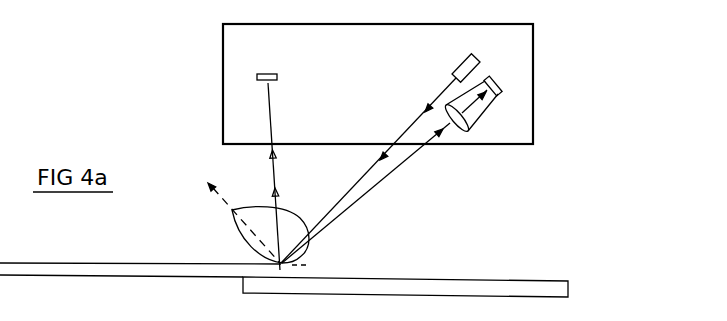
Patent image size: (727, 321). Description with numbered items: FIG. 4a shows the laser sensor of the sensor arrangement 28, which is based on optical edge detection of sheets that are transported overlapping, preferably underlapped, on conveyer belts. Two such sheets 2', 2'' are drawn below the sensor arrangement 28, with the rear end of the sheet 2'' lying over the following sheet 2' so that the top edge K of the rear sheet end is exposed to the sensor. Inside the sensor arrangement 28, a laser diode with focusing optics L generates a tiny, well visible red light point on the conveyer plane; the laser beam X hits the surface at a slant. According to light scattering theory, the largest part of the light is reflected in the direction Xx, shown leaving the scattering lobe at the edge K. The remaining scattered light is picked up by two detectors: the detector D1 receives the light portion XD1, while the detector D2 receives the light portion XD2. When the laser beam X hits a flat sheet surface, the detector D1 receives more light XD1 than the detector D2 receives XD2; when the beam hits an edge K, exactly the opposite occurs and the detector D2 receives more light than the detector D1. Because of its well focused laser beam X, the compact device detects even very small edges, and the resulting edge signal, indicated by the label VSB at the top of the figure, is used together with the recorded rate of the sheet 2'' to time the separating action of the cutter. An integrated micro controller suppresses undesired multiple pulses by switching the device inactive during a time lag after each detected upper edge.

The sensor arrangement 28 is at (348, 25).
The detector D1 is at (280, 82).
The detector D2 is at (484, 105).
The laser diode with focusing optics L is at (470, 62).
The edge K is at (305, 257).
The laser beam X is at (395, 147).
The light received by detector D1 XD1 is at (275, 122).
The light received by detector D2 XD2 is at (384, 176).
The reflection direction Xx is at (238, 211).
The sheet 2' is at (405, 298).
The sheet 2'' is at (140, 287).
The signal processing unit VSB is at (116, 9).